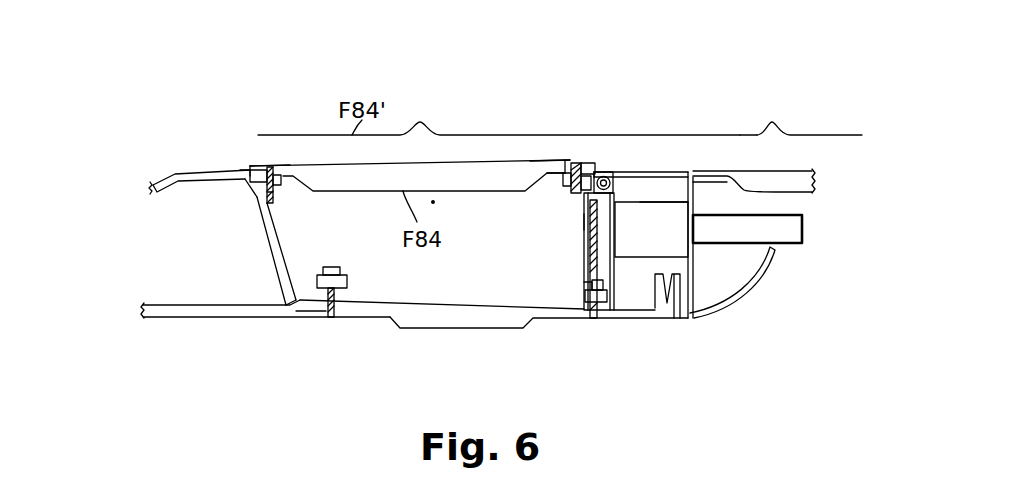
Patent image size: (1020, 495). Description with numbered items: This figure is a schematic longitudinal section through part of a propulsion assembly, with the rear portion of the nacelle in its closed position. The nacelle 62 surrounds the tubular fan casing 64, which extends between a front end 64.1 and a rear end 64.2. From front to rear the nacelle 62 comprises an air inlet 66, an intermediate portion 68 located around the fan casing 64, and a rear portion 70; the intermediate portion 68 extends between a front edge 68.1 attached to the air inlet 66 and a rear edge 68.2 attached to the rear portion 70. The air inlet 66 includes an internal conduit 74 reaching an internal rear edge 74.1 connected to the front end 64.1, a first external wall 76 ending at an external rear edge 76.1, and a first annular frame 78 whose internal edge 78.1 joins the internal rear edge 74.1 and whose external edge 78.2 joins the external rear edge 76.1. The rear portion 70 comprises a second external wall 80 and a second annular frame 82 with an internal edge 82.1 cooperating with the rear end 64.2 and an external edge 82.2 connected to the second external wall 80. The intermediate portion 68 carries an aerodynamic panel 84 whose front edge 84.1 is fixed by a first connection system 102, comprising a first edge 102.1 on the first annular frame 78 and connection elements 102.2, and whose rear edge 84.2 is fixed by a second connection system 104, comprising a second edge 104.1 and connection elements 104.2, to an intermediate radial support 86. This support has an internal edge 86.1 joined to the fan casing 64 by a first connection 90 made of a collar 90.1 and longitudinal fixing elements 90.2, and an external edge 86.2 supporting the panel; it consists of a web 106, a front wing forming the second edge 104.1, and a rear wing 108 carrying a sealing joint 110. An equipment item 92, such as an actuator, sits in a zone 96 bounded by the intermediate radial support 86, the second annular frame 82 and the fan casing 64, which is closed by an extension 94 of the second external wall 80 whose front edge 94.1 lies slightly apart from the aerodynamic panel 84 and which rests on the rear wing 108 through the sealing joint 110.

The nacelle 62 is at (743, 121).
The fan casing 64 is at (479, 329).
The front end of the fan casing 64.1 is at (341, 318).
The rear end of the fan casing 64.2 is at (672, 310).
The air inlet 66 is at (128, 180).
The intermediate portion 68 is at (424, 144).
The front edge of the intermediate portion 68.1 is at (256, 164).
The rear edge of the intermediate portion 68.2 is at (586, 160).
The rear portion 70 is at (777, 145).
The internal conduit 74 is at (183, 318).
The internal rear edge 74.1 is at (313, 311).
The first external wall 76 is at (166, 192).
The external rear edge 76.1 is at (241, 185).
The first annular frame 78 is at (277, 258).
The internal edge of the first annular frame 78.1 is at (287, 301).
The external edge of the first annular frame 78.2 is at (245, 170).
The second external wall 80 is at (727, 166).
The second annular frame 82 is at (693, 262).
The internal edge of the second annular frame 82.1 is at (692, 298).
The external edge of the second annular frame 82.2 is at (697, 184).
The aerodynamic panel 84 is at (470, 158).
The front edge of the aerodynamic panel 84.1 is at (258, 165).
The rear edge of the aerodynamic panel 84.2 is at (562, 165).
The intermediate radial support 86 is at (579, 252).
The internal edge of the intermediate radial support 86.1 is at (585, 285).
The external edge of the intermediate radial support 86.2 is at (580, 188).
The first connection 90 is at (577, 320).
The collar 90.1 is at (590, 309).
The fixing elements 90.2 is at (609, 294).
The equipment item 92 is at (670, 201).
The extension 94 is at (675, 164).
The front edge of the extension 94.1 is at (600, 172).
The zone 96 is at (634, 283).
The first connection system 102 is at (283, 156).
The first edge 102.1 is at (284, 183).
The connection elements 102.2 is at (288, 222).
The second connection system 104 is at (579, 150).
The second edge 104.1 is at (560, 183).
The connection elements 104.2 is at (569, 163).
The web 106 is at (584, 222).
The rear wing 108 is at (615, 201).
The sealing joint 110 is at (611, 176).